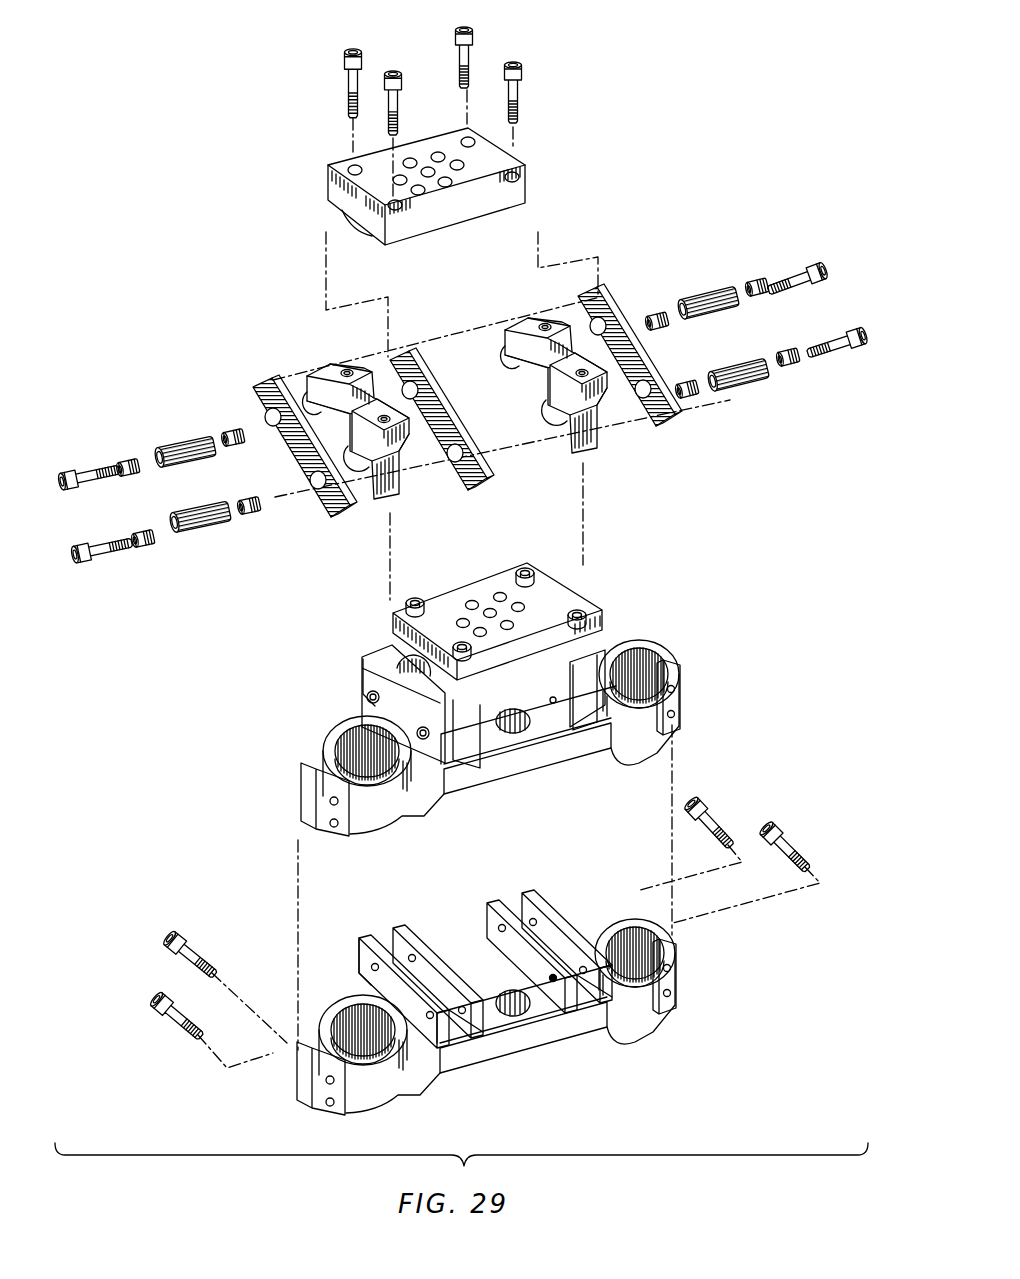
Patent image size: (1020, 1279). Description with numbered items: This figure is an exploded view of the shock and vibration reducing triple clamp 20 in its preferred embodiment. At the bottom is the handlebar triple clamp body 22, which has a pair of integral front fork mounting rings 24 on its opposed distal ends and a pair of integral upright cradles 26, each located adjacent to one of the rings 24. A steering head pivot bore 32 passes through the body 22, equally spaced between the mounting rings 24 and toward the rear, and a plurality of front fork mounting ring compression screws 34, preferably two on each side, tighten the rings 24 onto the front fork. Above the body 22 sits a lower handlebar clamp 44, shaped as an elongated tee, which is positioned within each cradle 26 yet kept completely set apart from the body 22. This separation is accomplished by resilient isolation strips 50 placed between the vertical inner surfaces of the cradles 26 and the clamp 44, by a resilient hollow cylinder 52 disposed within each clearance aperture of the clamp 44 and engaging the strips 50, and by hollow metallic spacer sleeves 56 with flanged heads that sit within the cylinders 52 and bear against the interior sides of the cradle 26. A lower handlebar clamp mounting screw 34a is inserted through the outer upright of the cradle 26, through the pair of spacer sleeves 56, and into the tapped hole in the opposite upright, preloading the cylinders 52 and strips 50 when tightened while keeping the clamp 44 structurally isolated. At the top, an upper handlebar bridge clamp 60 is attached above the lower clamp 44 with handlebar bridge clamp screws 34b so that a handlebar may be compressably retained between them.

The shock and vibration reducing triple clamp 20 is at (335, 705).
The handlebar triple clamp body 22 is at (463, 980).
The front fork mounting rings 24 is at (655, 1030).
The upright cradles 26 is at (362, 938).
The steering head pivot bore 32 is at (520, 1016).
The front fork mounting ring compression screws 34 is at (705, 800).
The lower handlebar clamp mounting screw 34a is at (98, 432).
The handlebar bridge clamp screws 34b is at (346, 62).
The lower handlebar clamp 44 is at (312, 368).
The resilient isolation strips 50 is at (333, 520).
The resilient hollow cylinder 52 is at (187, 440).
The hollow metallic spacer sleeves 56 is at (130, 455).
The upper handlebar bridge clamp 60 is at (528, 165).